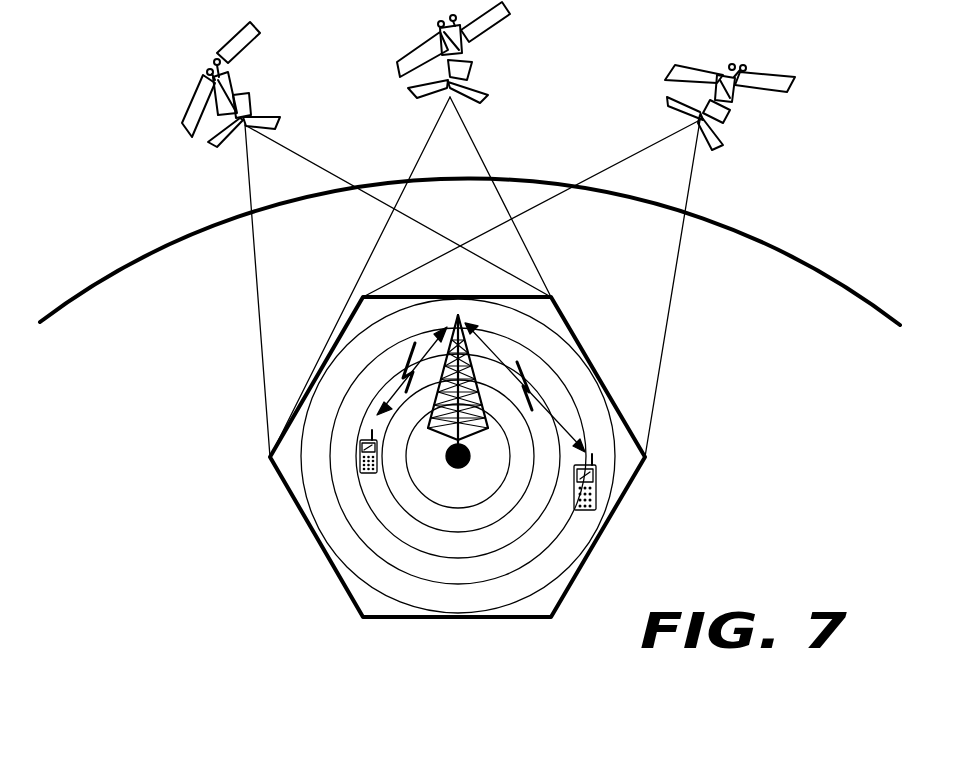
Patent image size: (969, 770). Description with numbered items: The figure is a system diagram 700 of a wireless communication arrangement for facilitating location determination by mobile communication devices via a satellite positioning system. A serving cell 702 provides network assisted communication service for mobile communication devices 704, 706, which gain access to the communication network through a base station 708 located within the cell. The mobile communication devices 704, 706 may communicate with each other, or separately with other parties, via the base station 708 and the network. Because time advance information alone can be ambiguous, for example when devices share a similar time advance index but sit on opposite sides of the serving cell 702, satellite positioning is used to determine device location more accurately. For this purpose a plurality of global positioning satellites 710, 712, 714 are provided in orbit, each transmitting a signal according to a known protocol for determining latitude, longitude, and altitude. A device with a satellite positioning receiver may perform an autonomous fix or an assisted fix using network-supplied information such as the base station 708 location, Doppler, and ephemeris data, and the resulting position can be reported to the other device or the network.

The system diagram 700 is at (760, 418).
The serving cell 702 is at (580, 578).
The mobile communication device 704 is at (597, 488).
The mobile communication device 706 is at (357, 454).
The base station 708 is at (438, 352).
The global positioning satellite 710 is at (215, 78).
The global positioning satellite 712 is at (442, 27).
The global positioning satellite 714 is at (730, 65).